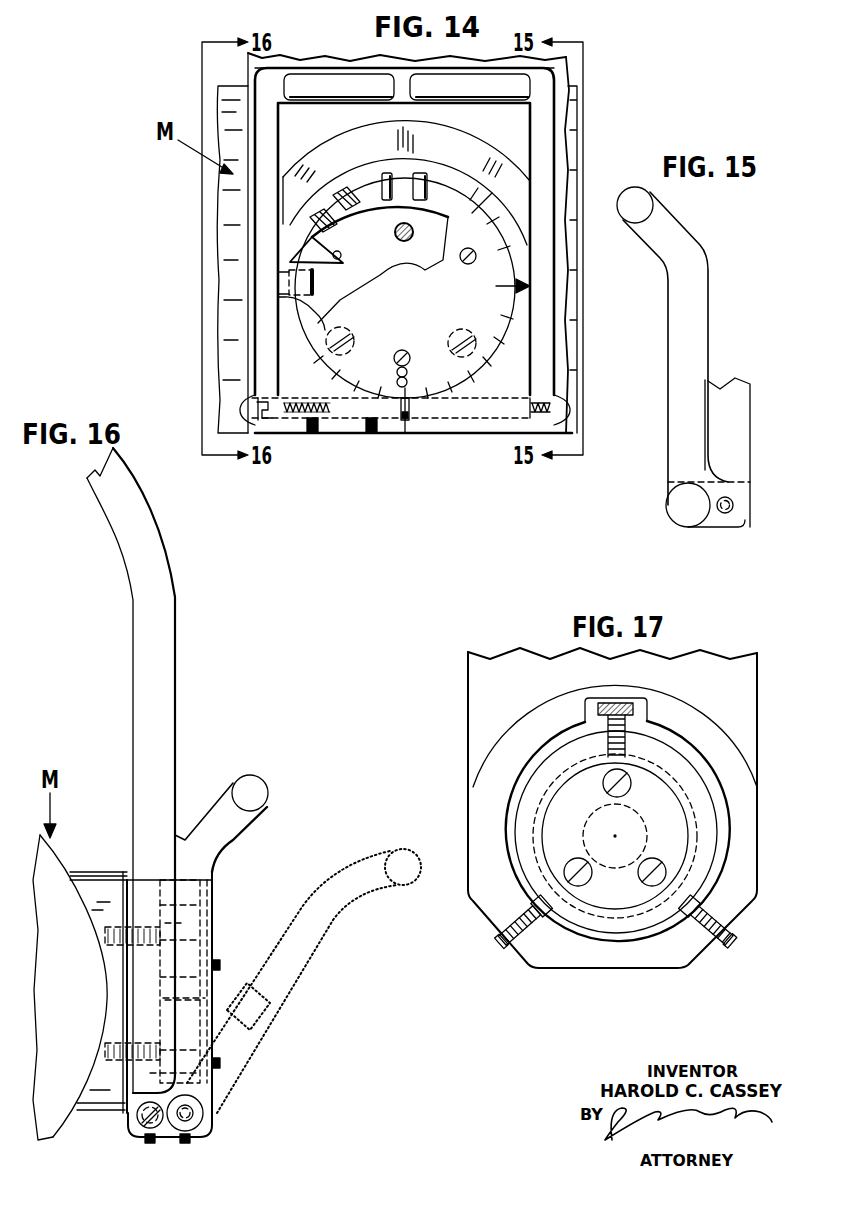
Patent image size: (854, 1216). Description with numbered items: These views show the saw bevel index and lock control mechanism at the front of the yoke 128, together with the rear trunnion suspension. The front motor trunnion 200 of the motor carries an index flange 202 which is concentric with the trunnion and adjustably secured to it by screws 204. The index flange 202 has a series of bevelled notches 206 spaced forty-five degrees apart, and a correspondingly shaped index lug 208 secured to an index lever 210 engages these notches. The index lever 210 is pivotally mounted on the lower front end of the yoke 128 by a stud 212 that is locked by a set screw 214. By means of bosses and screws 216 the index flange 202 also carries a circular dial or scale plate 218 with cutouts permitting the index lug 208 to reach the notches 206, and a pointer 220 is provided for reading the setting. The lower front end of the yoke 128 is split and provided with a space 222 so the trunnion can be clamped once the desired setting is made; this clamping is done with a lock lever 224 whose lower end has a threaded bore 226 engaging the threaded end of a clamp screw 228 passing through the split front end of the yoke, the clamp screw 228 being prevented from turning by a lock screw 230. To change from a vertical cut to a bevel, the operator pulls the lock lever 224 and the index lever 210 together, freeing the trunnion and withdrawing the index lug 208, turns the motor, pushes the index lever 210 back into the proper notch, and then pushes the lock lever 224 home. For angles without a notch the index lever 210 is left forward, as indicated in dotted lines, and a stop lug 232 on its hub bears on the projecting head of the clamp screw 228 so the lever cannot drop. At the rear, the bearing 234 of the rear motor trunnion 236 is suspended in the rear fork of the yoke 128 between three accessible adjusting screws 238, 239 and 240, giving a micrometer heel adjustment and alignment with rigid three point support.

In FIG. 14, the yoke 128 is at (348, 62).
In FIG. 15, the yoke 128 is at (743, 436).
In FIG. 16, the yoke 128 is at (174, 737).
In FIG. 17, the yoke 128 is at (509, 655).
In FIG. 16, the front motor trunnion 200 is at (112, 870).
In FIG. 14, the index flange 202 is at (438, 213).
In FIG. 16, the index flange 202 is at (150, 878).
In FIG. 14, the screws 204 is at (395, 234).
In FIG. 16, the screws 204 is at (107, 955).
In FIG. 14, the bevelled notches 206 is at (393, 178).
In FIG. 16, the bevelled notches 206 is at (182, 983).
In FIG. 14, the index lug 208 is at (300, 290).
In FIG. 16, the index lug 208 is at (247, 983).
In FIG. 14, the index lever 210 is at (265, 329).
In FIG. 16, the index lever 210 is at (238, 783).
In FIG. 14, the stud 212 is at (342, 398).
In FIG. 16, the stud 212 is at (213, 1123).
In FIG. 14, the set screw 214 is at (326, 434).
In FIG. 16, the set screw 214 is at (192, 1133).
In FIG. 14, the screws 216 is at (466, 265).
In FIG. 14, the dial or scale plate 218 is at (438, 258).
In FIG. 14, the pointer 220 is at (512, 345).
In FIG. 14, the space 222 is at (405, 436).
In FIG. 14, the lock lever 224 is at (556, 380).
In FIG. 15, the lock lever 224 is at (702, 366).
In FIG. 14, the threaded bore 226 is at (535, 432).
In FIG. 15, the threaded bore 226 is at (733, 513).
In FIG. 14, the clamp screw 228 is at (456, 418).
In FIG. 15, the clamp screw 228 is at (729, 501).
In FIG. 16, the clamp screw 228 is at (140, 1128).
In FIG. 14, the lock screw 230 is at (372, 420).
In FIG. 16, the lock screw 230 is at (147, 1144).
In FIG. 16, the stop lug 232 is at (166, 1144).
In FIG. 17, the bearing 234 is at (592, 915).
In FIG. 17, the rear motor trunnion 236 is at (620, 900).
In FIG. 17, the adjusting screw 238 is at (538, 902).
In FIG. 17, the adjusting screw 239 is at (690, 902).
In FIG. 17, the adjusting screw 240 is at (625, 712).